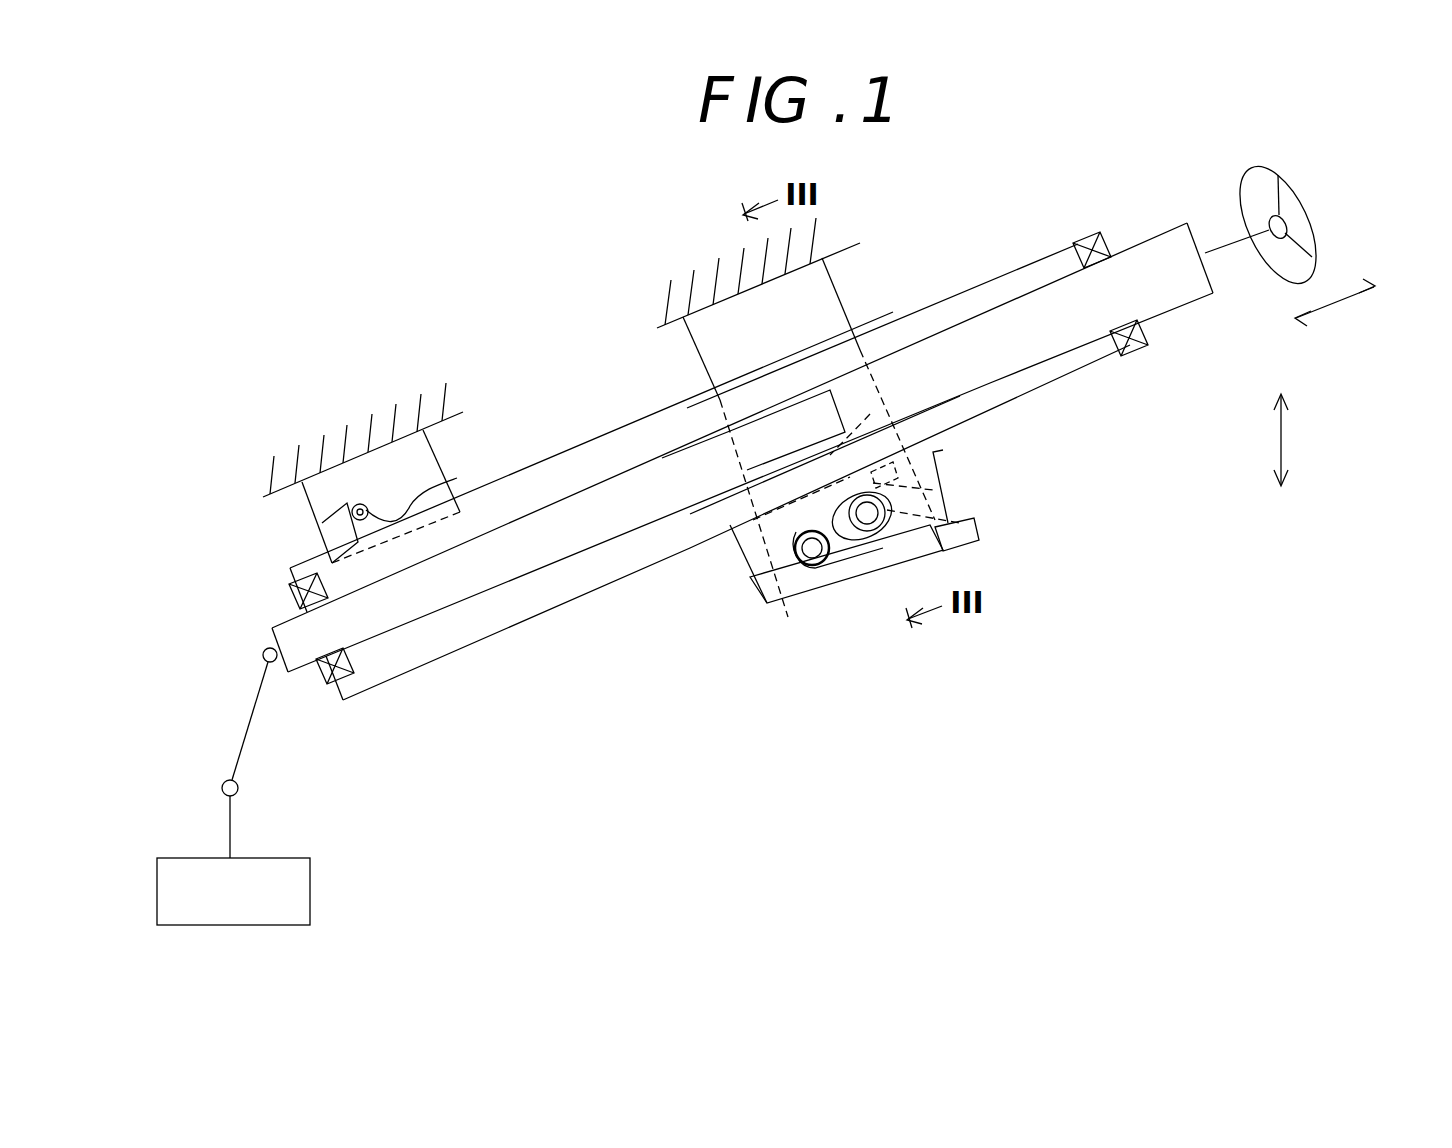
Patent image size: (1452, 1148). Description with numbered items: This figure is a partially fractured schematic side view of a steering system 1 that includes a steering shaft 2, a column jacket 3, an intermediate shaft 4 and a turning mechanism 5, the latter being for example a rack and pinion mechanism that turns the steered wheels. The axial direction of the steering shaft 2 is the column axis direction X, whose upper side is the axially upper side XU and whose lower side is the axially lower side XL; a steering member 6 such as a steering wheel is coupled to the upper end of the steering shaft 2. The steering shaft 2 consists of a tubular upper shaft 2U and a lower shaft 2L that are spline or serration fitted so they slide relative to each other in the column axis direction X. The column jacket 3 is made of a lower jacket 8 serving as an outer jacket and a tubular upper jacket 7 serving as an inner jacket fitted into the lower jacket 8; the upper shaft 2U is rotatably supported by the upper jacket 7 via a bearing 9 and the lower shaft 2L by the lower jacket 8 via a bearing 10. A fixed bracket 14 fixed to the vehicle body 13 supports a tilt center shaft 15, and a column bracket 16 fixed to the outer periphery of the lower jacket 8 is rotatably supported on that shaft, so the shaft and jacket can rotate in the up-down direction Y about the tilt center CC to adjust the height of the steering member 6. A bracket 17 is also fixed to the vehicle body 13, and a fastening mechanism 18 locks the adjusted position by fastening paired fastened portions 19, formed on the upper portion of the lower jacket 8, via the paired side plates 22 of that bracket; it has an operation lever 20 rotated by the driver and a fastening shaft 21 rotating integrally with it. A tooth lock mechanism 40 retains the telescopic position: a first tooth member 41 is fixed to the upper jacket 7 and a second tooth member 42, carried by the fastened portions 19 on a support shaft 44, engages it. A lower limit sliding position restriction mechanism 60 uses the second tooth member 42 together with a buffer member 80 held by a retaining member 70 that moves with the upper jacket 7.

The steering system 1 is at (1180, 166).
The steering shaft 2 is at (1130, 240).
The upper shaft 2U is at (1188, 302).
The lower shaft 2L is at (470, 598).
The column jacket 3 is at (578, 443).
The intermediate shaft 4 is at (248, 727).
The turning mechanism 5 is at (312, 888).
The steering member 6 is at (1261, 164).
The upper jacket 7 is at (1068, 385).
The lower jacket 8 is at (587, 595).
The bearing 9 is at (1127, 357).
The bearing 10 is at (331, 684).
The vehicle body 13 is at (383, 425).
The fixed bracket 14 is at (428, 450).
The tilt center shaft 15 is at (317, 523).
The column bracket 16 is at (457, 480).
The bracket 17 is at (840, 282).
The fastening mechanism 18 is at (1005, 528).
The fastened portions 19 is at (770, 587).
The operation lever 20 is at (982, 545).
The fastening shaft 21 is at (868, 532).
The side plates 22 is at (710, 347).
The tooth lock mechanism 40 is at (805, 511).
The first tooth member 41 is at (870, 414).
The second tooth member 42 is at (837, 482).
The support shaft 44 is at (812, 565).
The lower limit sliding position restriction mechanism 60 is at (950, 465).
The retaining member 70 is at (890, 492).
The buffer member 80 is at (920, 490).
The tilt center CC is at (357, 505).
The column axis direction X is at (1340, 300).
The axially upper side XU is at (1400, 282).
The axially lower side XL is at (1275, 326).
The up-down direction Y is at (1292, 447).